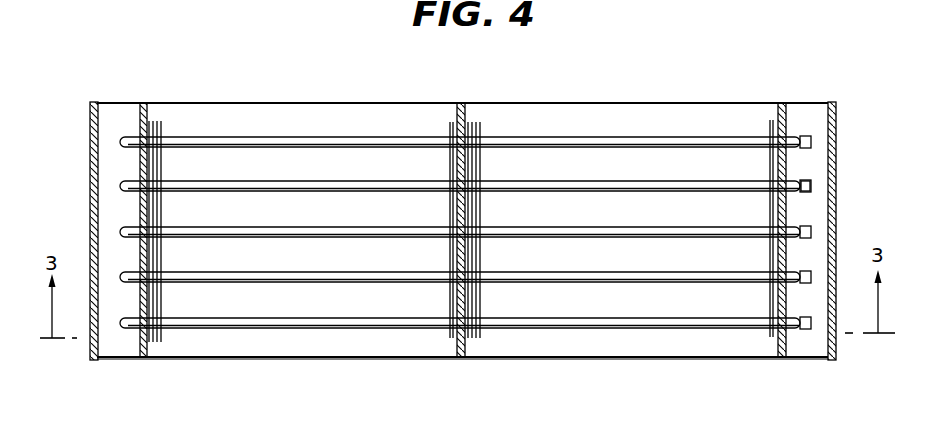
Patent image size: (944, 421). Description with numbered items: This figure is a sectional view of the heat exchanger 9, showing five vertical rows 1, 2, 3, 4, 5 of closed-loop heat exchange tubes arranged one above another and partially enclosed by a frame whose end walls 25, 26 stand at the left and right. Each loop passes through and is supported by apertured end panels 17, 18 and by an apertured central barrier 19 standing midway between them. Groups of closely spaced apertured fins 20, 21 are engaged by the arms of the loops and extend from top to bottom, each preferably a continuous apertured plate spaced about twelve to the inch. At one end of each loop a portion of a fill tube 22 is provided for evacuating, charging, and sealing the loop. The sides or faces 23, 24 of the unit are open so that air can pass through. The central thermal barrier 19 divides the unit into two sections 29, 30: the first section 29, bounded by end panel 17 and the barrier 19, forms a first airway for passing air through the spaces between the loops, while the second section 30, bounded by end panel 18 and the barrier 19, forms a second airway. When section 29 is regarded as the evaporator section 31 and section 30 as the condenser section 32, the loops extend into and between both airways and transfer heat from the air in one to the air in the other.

The vertical row 1 is at (627, 313).
The vertical row 2 is at (622, 268).
The vertical row 3 is at (620, 223).
The vertical row 4 is at (618, 178).
The vertical row 5 is at (618, 133).
The heat exchanger 9 is at (176, 366).
The end panel 17 is at (142, 163).
The end panel 18 is at (786, 160).
The central barrier 19 is at (465, 103).
The fins 20 is at (158, 118).
The fins 21 is at (765, 123).
The fill tube 22 is at (800, 186).
The side 23 is at (250, 360).
The side 24 is at (262, 90).
The end wall 25 is at (92, 182).
The end wall 26 is at (836, 137).
The section 29 is at (280, 158).
The section 30 is at (502, 157).
The evaporator section 31 is at (330, 155).
The condenser section 32 is at (543, 162).